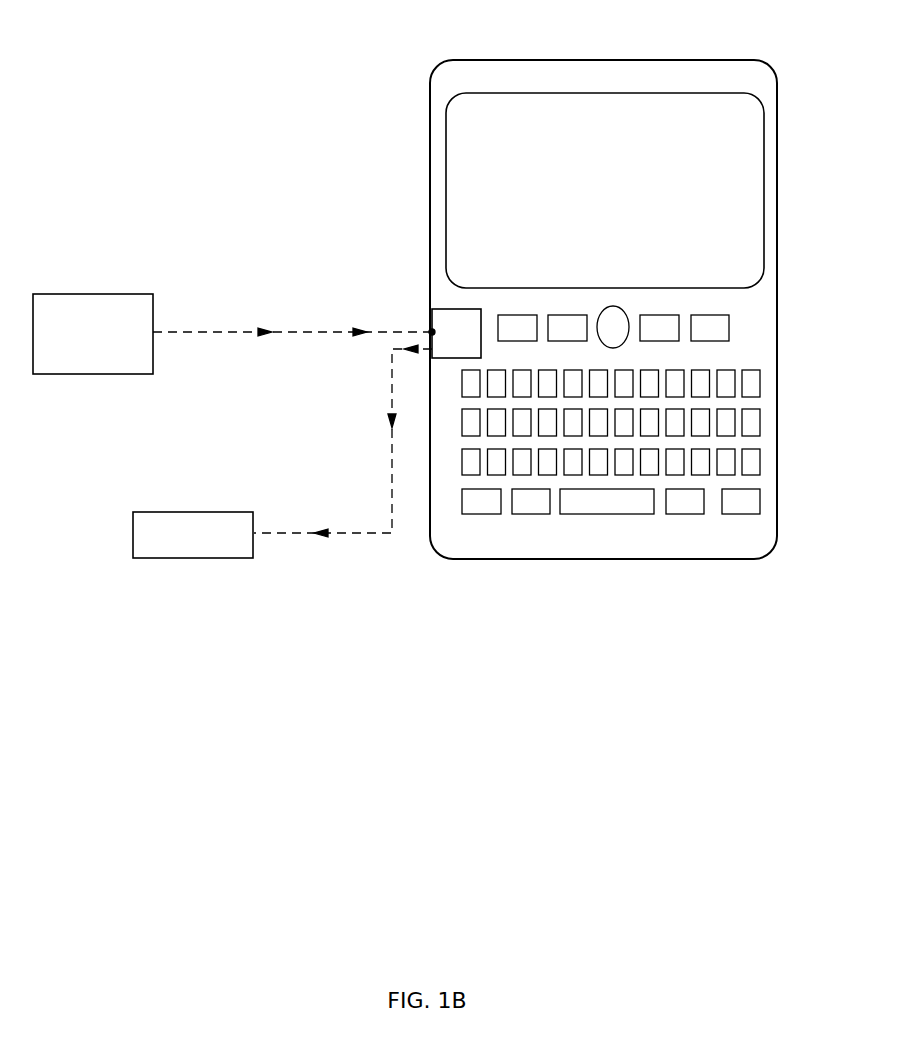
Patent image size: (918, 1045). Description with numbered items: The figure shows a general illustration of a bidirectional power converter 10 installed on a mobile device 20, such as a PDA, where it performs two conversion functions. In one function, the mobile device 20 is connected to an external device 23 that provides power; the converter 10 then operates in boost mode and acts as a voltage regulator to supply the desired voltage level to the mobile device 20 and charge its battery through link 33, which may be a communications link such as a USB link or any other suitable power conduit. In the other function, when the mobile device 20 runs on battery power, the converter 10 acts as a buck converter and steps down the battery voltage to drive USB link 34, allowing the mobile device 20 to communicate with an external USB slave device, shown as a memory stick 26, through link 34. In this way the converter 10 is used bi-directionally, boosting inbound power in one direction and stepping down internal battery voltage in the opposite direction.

The mobile device 20 is at (733, 58).
The converter 10 is at (456, 333).
The external device 23 is at (93, 294).
The link 33 is at (220, 332).
The USB link 34 is at (372, 533).
The memory stick 26 is at (254, 518).